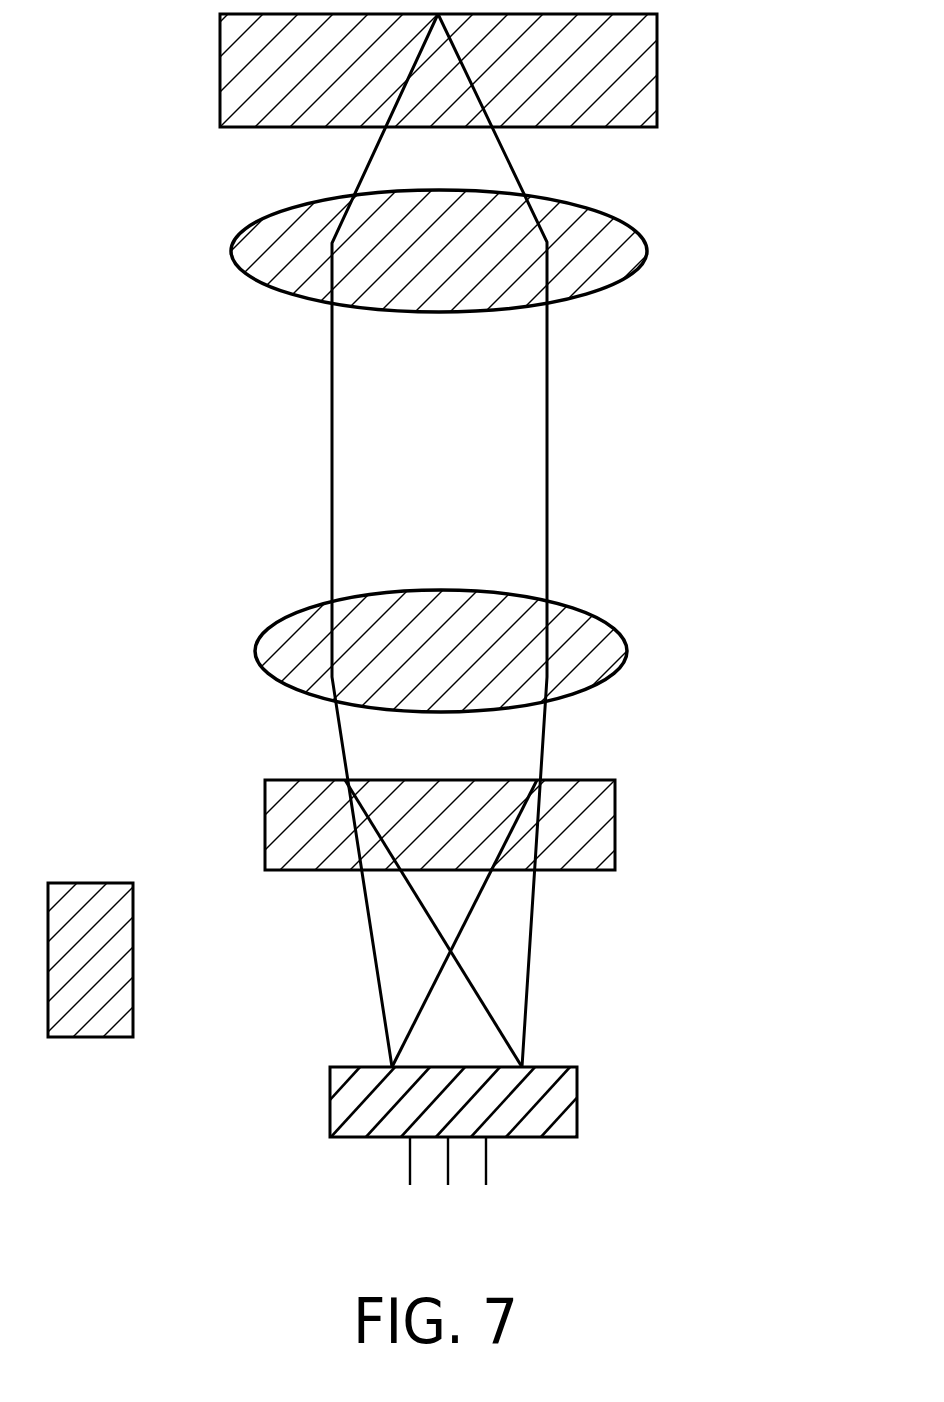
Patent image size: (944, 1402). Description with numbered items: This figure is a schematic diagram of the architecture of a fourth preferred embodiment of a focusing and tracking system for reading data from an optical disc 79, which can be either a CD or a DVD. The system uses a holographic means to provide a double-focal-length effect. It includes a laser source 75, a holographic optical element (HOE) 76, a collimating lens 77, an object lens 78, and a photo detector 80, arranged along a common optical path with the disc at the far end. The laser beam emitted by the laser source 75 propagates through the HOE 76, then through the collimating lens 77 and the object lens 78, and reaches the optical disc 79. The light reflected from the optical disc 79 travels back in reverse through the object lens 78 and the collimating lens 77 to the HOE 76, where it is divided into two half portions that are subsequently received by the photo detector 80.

The laser source 75 is at (355, 1098).
The holographic optical element (HOE) 76 is at (570, 818).
The collimating lens 77 is at (577, 627).
The object lens 78 is at (598, 257).
The optical disc 79 is at (587, 60).
The photo detector 80 is at (93, 917).